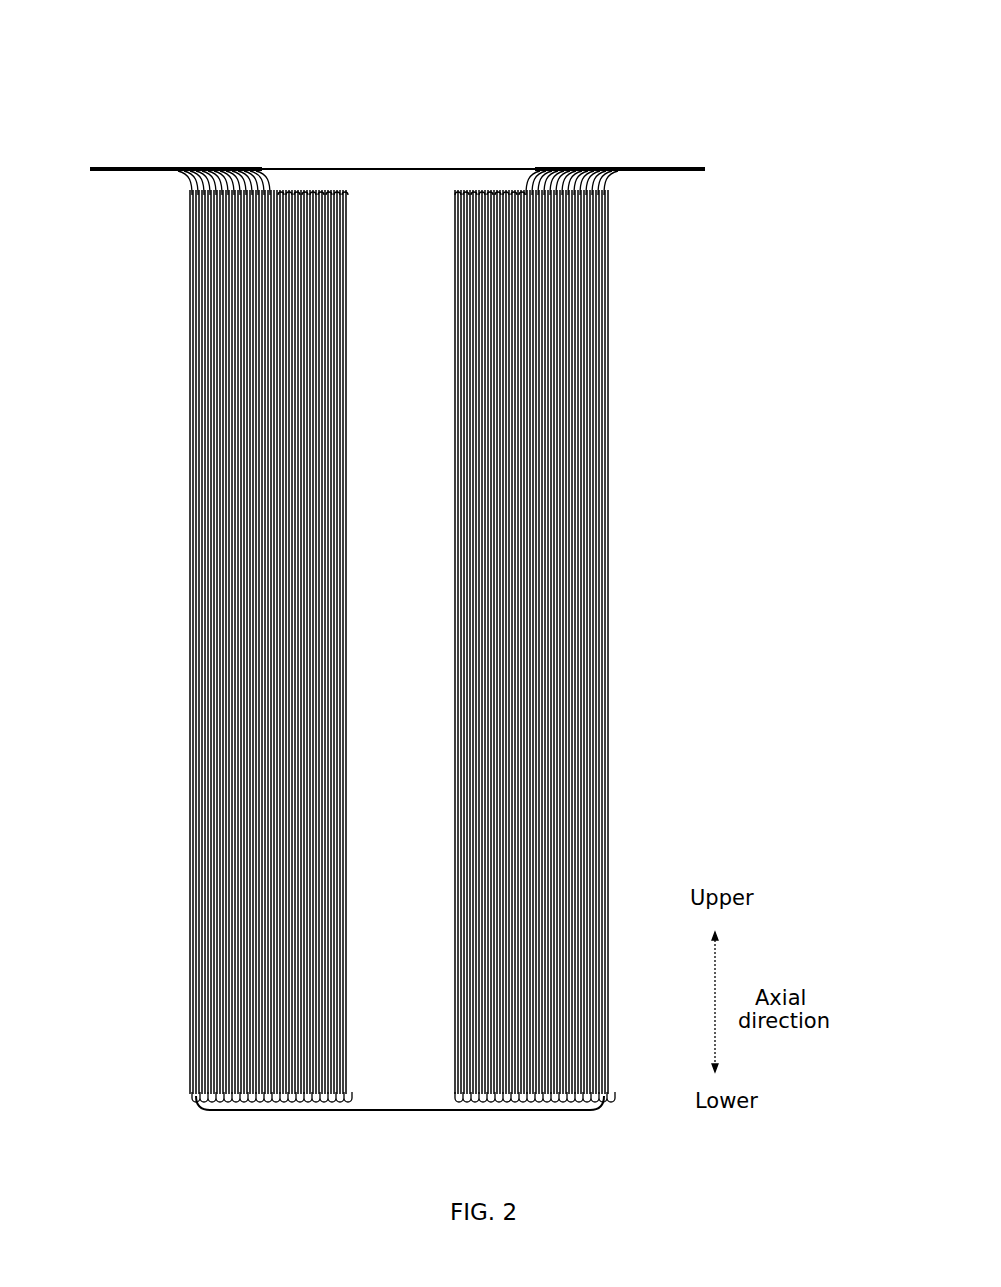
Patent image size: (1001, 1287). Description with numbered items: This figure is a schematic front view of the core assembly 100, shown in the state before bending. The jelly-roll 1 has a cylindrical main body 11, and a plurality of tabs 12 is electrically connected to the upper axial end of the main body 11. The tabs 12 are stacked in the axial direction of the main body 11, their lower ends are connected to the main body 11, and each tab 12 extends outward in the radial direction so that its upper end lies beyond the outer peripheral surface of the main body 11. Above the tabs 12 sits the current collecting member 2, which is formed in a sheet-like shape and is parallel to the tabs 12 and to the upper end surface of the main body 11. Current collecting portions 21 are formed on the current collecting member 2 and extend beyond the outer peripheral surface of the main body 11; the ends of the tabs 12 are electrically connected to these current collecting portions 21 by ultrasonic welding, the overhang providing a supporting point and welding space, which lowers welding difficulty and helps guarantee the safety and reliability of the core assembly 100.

The core assembly 100 is at (108, 25).
The jelly-roll 1 is at (97, 274).
The main body 11 is at (216, 376).
The tab 12 is at (188, 177).
The current collecting member 2 is at (397, 167).
The current collecting portion 21 is at (116, 167).